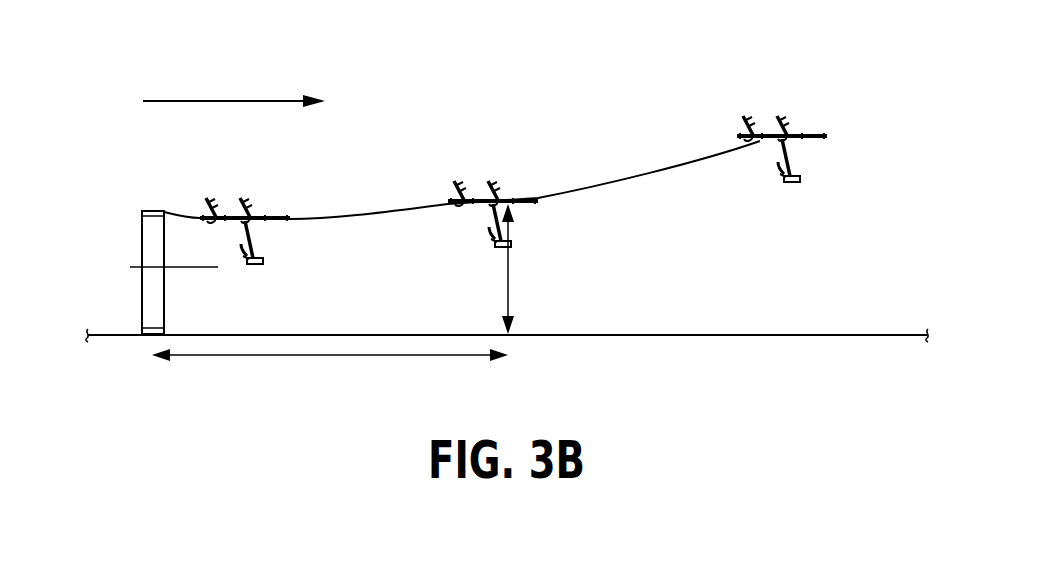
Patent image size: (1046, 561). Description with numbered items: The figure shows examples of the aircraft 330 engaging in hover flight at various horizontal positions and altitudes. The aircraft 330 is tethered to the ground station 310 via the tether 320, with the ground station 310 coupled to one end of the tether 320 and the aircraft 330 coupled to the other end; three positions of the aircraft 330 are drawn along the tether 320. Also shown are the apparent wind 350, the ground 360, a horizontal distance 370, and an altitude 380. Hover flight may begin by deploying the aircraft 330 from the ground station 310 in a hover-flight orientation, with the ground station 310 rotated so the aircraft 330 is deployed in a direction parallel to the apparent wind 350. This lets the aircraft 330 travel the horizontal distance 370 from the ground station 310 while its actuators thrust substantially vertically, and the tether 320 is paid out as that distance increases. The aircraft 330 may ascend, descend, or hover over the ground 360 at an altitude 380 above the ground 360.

The ground station 310 is at (130, 267).
The tether 320 is at (625, 184).
The aircraft 330 is at (265, 222).
The apparent wind 350 is at (210, 100).
The ground 360 is at (834, 334).
The horizontal distance 370 is at (318, 355).
The altitude 380 is at (505, 277).